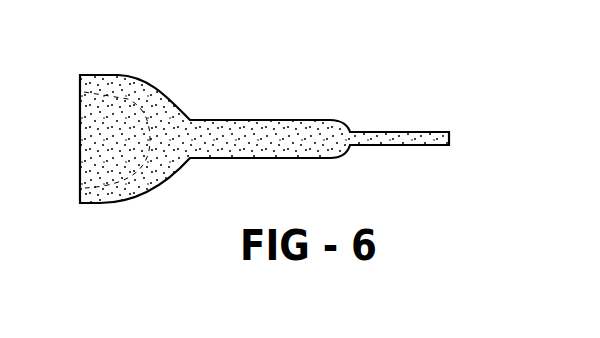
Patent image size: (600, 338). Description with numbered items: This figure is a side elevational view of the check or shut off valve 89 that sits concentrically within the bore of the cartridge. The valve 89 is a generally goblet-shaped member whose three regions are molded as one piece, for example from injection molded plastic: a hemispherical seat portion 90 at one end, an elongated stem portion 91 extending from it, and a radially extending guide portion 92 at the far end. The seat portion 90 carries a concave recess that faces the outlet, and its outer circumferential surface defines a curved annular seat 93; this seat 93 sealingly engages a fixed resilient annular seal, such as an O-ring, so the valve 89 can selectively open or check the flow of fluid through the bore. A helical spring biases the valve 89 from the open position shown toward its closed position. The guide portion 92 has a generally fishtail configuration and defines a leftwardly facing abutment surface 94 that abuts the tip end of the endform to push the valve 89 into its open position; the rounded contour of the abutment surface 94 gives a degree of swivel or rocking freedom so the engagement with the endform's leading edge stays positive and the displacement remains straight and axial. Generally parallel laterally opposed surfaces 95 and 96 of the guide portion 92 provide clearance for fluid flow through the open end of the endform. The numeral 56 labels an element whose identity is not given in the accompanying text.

The splice member 56 is at (0, 1).
The shut off valve 89 is at (190, 170).
The seat portion 90 is at (96, 204).
The stem portion 91 is at (290, 121).
The guide portion 92 is at (377, 131).
The curved annular seat 93 is at (150, 85).
The abutment surface 94 is at (449, 138).
The laterally opposed surface 95 is at (406, 132).
The lower surface of tip 96 is at (406, 145).